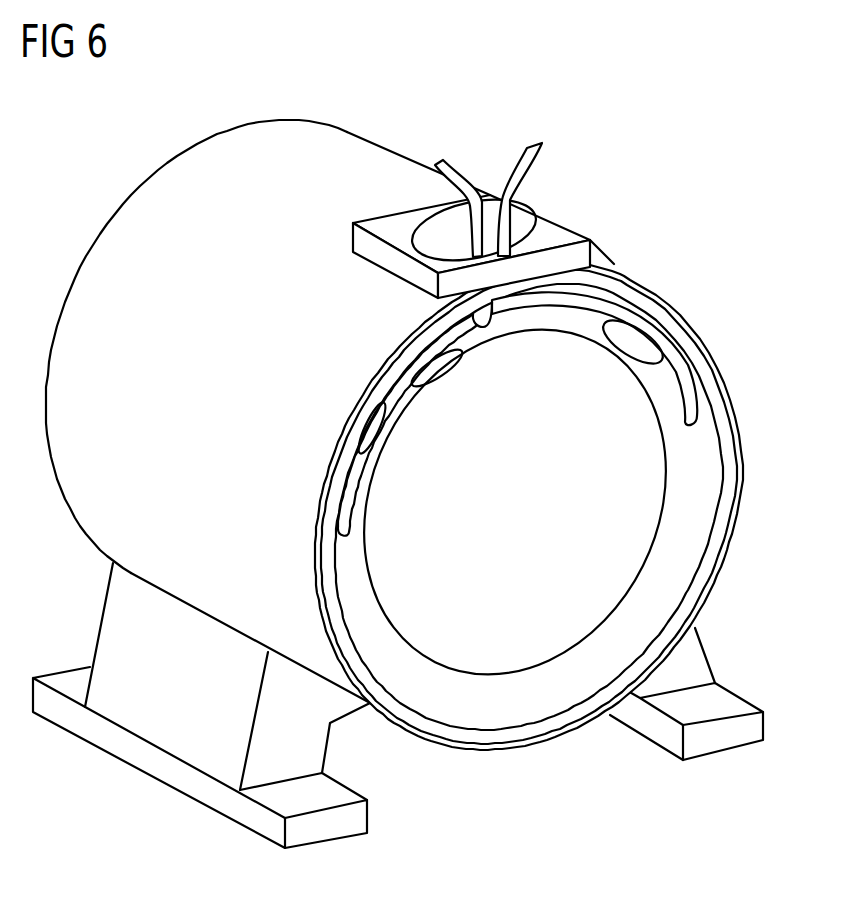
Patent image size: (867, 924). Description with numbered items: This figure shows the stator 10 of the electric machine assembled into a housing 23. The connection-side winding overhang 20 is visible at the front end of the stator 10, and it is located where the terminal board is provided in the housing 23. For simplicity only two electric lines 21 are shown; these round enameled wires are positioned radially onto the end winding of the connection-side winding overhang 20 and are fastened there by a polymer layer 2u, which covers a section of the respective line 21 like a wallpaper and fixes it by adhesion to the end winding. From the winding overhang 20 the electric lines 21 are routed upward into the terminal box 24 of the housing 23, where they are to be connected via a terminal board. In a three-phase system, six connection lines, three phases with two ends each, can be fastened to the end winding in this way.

The housing 23 is at (370, 152).
The electric lines 21 is at (448, 160).
The terminal box 24 is at (540, 209).
The polymer layer 2u is at (368, 392).
The connection-side winding overhang 20 is at (705, 440).
The stator 10 is at (640, 495).